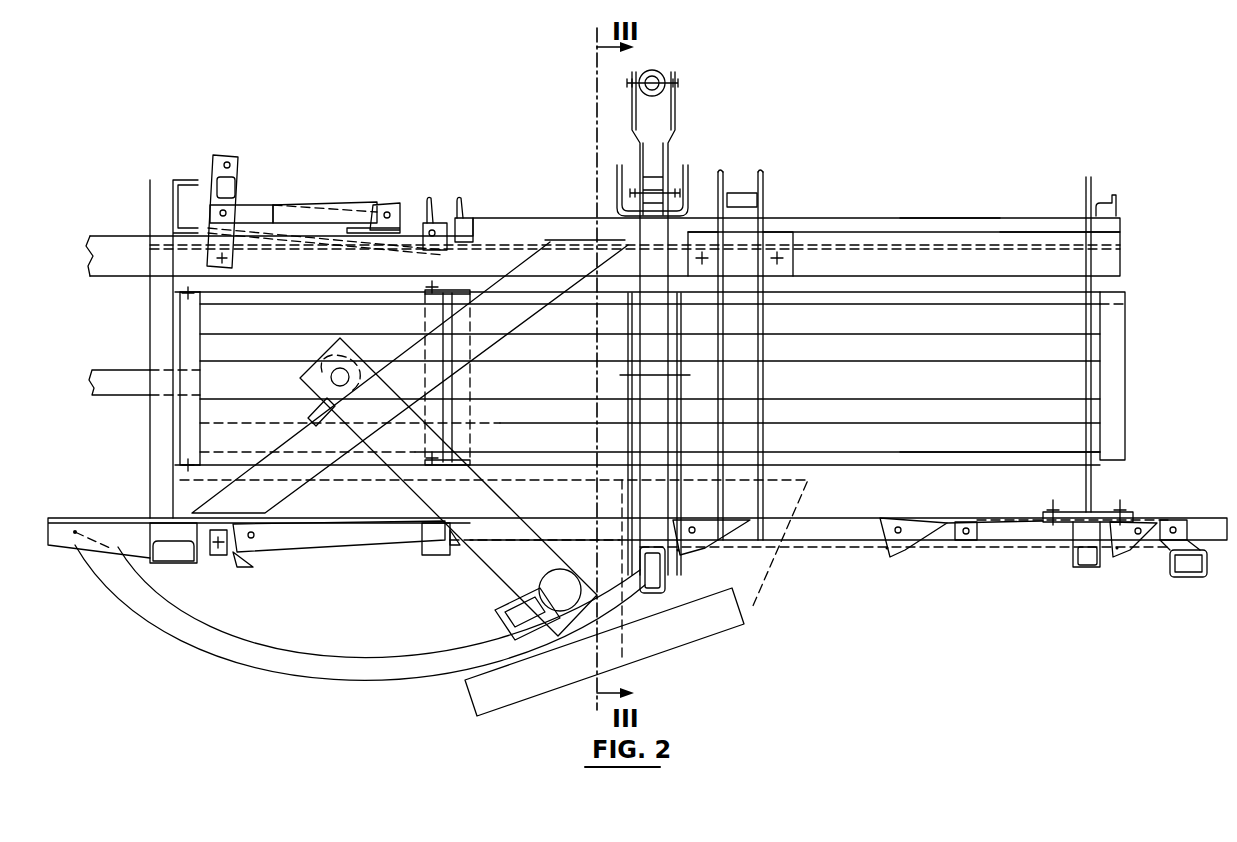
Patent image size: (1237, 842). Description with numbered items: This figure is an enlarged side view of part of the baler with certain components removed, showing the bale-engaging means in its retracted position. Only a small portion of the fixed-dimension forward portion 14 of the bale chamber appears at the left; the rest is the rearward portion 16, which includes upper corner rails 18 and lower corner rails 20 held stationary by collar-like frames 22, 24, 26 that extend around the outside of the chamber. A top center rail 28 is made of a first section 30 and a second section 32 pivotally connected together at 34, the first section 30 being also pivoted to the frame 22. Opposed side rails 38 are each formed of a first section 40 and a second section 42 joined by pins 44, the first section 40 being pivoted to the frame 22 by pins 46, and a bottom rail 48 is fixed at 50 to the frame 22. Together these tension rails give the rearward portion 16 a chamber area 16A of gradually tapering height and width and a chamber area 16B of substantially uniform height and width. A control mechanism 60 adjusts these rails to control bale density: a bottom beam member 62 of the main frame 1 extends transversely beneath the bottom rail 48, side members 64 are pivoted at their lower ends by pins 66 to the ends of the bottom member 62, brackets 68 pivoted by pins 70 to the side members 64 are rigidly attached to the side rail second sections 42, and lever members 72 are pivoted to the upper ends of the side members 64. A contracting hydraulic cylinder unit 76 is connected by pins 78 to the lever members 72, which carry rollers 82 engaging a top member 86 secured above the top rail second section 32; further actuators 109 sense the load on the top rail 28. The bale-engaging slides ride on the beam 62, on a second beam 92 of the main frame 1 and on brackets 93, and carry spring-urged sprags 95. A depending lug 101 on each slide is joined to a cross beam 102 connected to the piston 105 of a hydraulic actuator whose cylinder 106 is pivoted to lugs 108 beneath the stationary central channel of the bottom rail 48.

The main frame 1 is at (540, 690).
The forward portion 14 is at (105, 225).
The rearward portion 16 is at (1133, 271).
The chamber area 16A is at (322, 195).
The chamber area 16B is at (975, 195).
The upper corner rails 18 is at (1015, 232).
The lower corner rails 20 is at (835, 520).
The frame 22 is at (163, 180).
The frame 24 is at (745, 193).
The frame 26 is at (1092, 195).
The top center rail 28 is at (829, 214).
The first section 30 is at (330, 243).
The second section 32 is at (910, 218).
The pivotal connection 34 is at (434, 225).
The side rails 38 is at (548, 470).
The first section 40 is at (200, 412).
The second section 42 is at (938, 440).
The pins 44 is at (432, 290).
The pins 46 is at (170, 285).
The bottom rail 48 is at (330, 540).
The fixing point 50 is at (217, 556).
The control mechanism 60 is at (624, 350).
The bottom beam member 62 is at (448, 491).
The linkage or side members 64 is at (625, 498).
The pins 66 is at (645, 585).
The brackets 68 is at (682, 437).
The pins 70 is at (618, 375).
The lever members 72 is at (672, 120).
The hydraulic cylinder unit 76 is at (665, 70).
The pins 78 is at (680, 83).
The rollers 82 is at (660, 175).
The top member 86 is at (617, 202).
The beam 92 is at (1085, 568).
The brackets 93 is at (432, 556).
The sprags 95 is at (250, 567).
The depending lug 101 is at (1200, 578).
The cross beam 102 is at (1180, 580).
The piston 105 is at (1162, 525).
The cylinder 106 is at (995, 542).
The lugs 108 is at (950, 540).
The actuators 109 is at (378, 203).